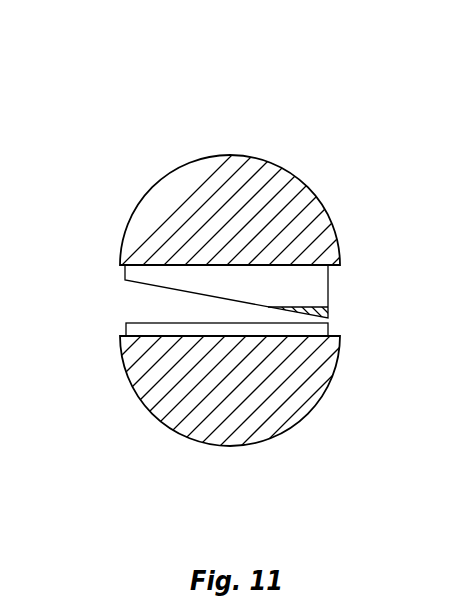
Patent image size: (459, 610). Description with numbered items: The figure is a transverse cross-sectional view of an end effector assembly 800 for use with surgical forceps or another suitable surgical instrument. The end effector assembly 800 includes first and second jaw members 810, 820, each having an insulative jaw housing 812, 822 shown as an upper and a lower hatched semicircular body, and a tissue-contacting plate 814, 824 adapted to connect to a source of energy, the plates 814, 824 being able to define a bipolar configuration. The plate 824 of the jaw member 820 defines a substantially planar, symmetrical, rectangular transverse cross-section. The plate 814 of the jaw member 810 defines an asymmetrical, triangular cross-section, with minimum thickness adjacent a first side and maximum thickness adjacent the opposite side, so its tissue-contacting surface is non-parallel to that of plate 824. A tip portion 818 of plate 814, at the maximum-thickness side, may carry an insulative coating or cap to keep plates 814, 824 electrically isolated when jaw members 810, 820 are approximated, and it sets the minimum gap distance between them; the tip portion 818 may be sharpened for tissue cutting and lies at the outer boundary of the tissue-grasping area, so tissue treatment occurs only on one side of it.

The end effector assembly 800 is at (229, 240).
The first jaw member 810 is at (230, 246).
The insulative jaw housing 812 is at (148, 207).
The tissue-contacting plate 814 is at (257, 280).
The tip portion 818 is at (328, 313).
The second jaw member 820 is at (229, 336).
The insulative jaw housing 822 is at (148, 385).
The tissue-contacting plate 824 is at (130, 327).